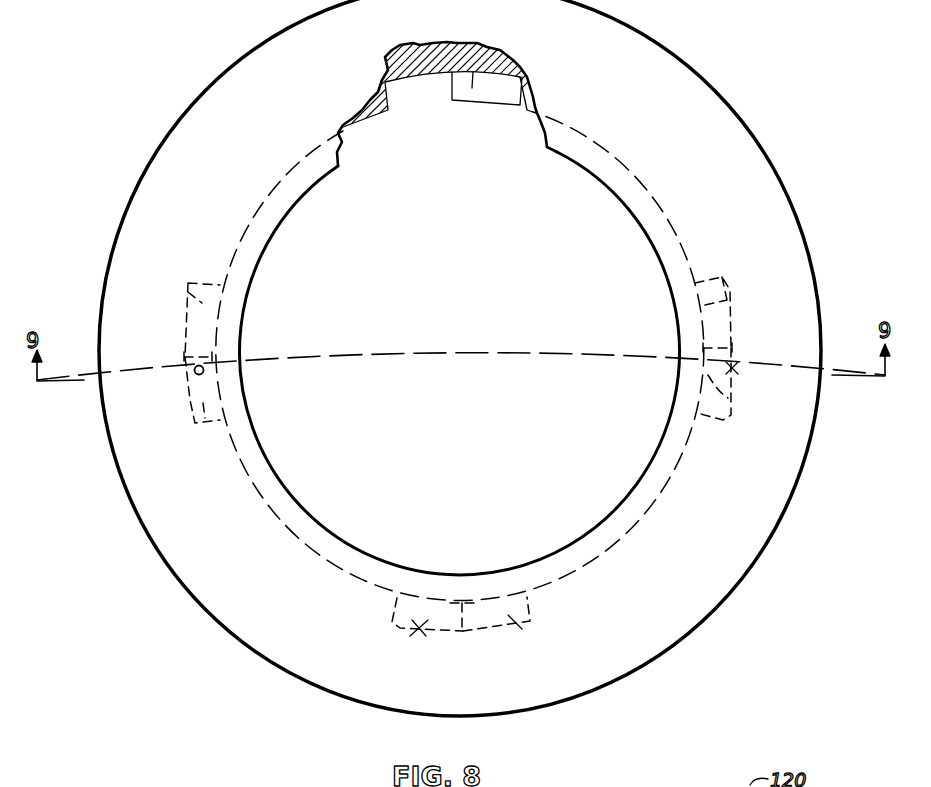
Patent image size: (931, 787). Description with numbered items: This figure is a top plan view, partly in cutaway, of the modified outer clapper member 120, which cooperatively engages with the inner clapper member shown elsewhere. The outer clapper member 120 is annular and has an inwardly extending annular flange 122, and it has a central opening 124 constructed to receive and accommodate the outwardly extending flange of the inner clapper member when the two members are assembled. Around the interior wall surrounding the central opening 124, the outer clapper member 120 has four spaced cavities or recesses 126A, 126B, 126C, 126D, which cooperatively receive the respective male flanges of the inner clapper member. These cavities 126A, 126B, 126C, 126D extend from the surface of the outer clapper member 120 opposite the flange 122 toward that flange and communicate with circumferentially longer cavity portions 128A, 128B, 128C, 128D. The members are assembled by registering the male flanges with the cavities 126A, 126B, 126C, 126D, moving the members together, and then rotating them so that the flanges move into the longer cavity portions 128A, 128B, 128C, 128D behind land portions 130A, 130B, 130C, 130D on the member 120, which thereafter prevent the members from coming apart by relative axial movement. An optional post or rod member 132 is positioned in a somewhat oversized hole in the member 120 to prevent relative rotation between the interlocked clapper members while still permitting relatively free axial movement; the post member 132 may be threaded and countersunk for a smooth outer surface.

The outer clapper member 120 is at (640, 32).
The inwardly extending annular flange 122 is at (300, 208).
The central opening 124 is at (625, 228).
The cavity 126A is at (510, 612).
The cavity 126B is at (728, 282).
The cavity 126C is at (412, 88).
The cavity 126D is at (203, 423).
The circumferentially longer cavity portion 128A is at (433, 613).
The circumferentially longer cavity portion 128B is at (730, 390).
The circumferentially longer cavity portion 128C is at (527, 72).
The circumferentially longer cavity portion 128D is at (196, 290).
The land portion 130A is at (440, 631).
The land portion 130B is at (735, 368).
The land portion 130C is at (485, 50).
The land portion 130D is at (187, 312).
The post member 132 is at (203, 371).